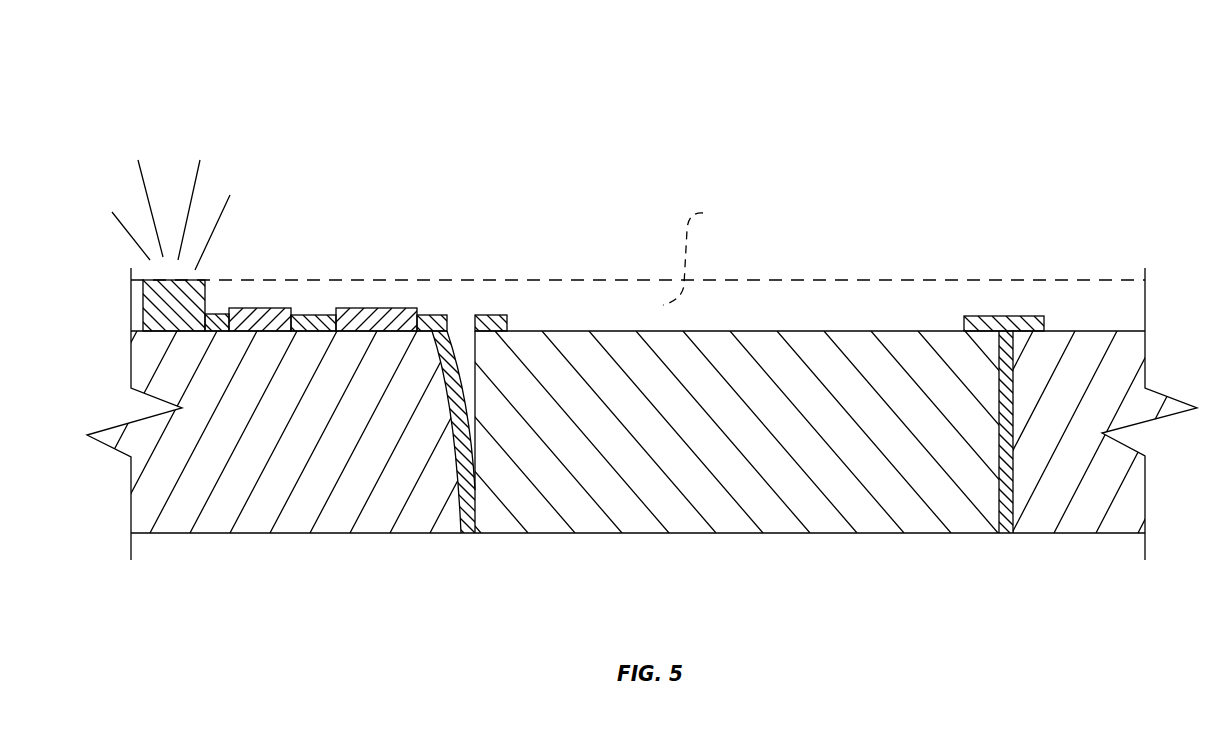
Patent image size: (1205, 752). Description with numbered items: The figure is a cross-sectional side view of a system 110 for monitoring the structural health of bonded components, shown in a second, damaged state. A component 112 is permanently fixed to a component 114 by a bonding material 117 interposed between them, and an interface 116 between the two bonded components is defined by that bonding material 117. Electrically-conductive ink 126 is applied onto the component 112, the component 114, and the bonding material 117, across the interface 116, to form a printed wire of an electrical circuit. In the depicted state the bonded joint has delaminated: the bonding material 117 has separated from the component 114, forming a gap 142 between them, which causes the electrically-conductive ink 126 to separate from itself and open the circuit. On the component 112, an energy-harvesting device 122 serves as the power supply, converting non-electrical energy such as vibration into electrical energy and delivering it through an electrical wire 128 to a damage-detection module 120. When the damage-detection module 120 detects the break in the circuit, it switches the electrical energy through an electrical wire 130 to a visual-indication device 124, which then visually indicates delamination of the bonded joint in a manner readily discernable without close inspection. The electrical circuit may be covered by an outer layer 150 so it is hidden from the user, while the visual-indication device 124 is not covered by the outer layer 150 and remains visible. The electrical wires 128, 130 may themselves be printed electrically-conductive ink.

The system 110 is at (312, 98).
The component 112 is at (258, 512).
The component 114 is at (880, 363).
The interface 116 is at (467, 538).
The bonding material 117 is at (468, 488).
The damage-detection module 120 is at (372, 318).
The energy-harvesting device 122 is at (245, 312).
The visual-indication device 124 is at (168, 312).
The electrically-conductive ink 126 is at (493, 317).
The electrical wire 128 is at (307, 323).
The electrical wire 130 is at (213, 313).
The gap 142 is at (471, 349).
The outer layer 150 is at (701, 253).